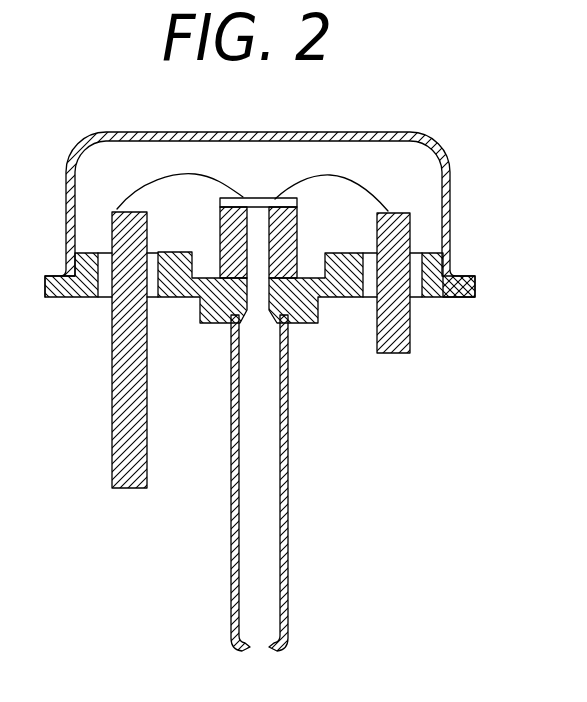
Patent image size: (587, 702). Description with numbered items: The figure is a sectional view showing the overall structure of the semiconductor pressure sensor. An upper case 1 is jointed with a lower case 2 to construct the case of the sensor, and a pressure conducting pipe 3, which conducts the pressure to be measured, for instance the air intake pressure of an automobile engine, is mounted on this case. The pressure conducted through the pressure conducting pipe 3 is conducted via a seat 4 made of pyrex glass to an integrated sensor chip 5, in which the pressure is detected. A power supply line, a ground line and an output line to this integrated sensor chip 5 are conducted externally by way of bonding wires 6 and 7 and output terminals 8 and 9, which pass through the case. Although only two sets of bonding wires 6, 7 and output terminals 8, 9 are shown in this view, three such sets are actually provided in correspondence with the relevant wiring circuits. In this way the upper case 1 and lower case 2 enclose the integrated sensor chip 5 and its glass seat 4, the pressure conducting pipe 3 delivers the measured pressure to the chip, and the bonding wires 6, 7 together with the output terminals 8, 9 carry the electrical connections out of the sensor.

The upper case 1 is at (448, 158).
The lower case 2 is at (305, 327).
The pressure conducting pipe 3 is at (289, 483).
The seat 4 is at (298, 228).
The integrated sensor chip 5 is at (257, 198).
The bonding wire 6 is at (349, 177).
The bonding wire 7 is at (167, 182).
The output terminal 8 is at (148, 466).
The output terminal 9 is at (412, 335).